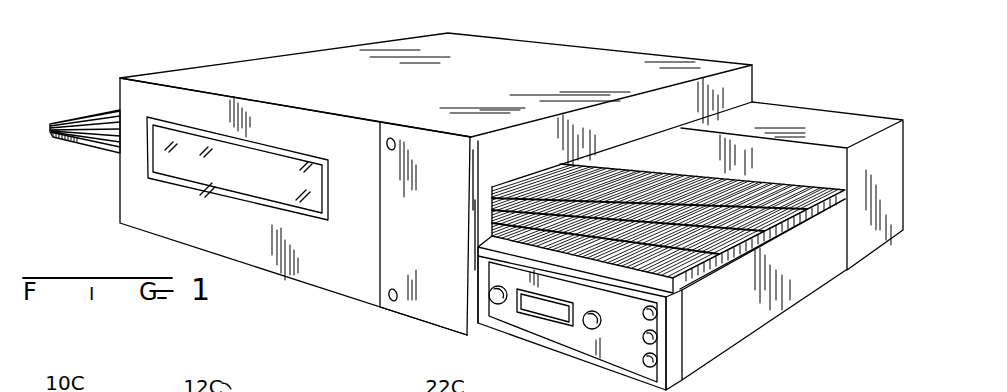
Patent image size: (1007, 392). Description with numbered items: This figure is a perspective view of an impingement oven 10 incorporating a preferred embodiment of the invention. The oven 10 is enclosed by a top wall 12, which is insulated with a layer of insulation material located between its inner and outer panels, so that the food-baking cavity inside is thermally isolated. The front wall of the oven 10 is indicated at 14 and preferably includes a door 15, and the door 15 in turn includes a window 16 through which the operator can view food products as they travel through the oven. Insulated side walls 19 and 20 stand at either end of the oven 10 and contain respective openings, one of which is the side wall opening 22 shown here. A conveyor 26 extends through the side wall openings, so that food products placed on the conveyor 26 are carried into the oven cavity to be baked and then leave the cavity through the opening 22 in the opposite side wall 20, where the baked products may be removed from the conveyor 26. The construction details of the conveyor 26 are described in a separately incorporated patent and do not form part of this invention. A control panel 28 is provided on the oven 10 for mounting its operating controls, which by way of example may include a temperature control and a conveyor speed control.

The impingement oven 10 is at (616, 43).
The top wall 12 is at (341, 52).
The front wall 14 is at (418, 275).
The door 15 is at (314, 262).
The window 16 is at (255, 175).
The side wall 19 is at (119, 183).
The side wall 20 is at (792, 160).
The side wall opening 22 is at (655, 147).
The conveyor 26 is at (96, 127).
The control panel 28 is at (616, 334).